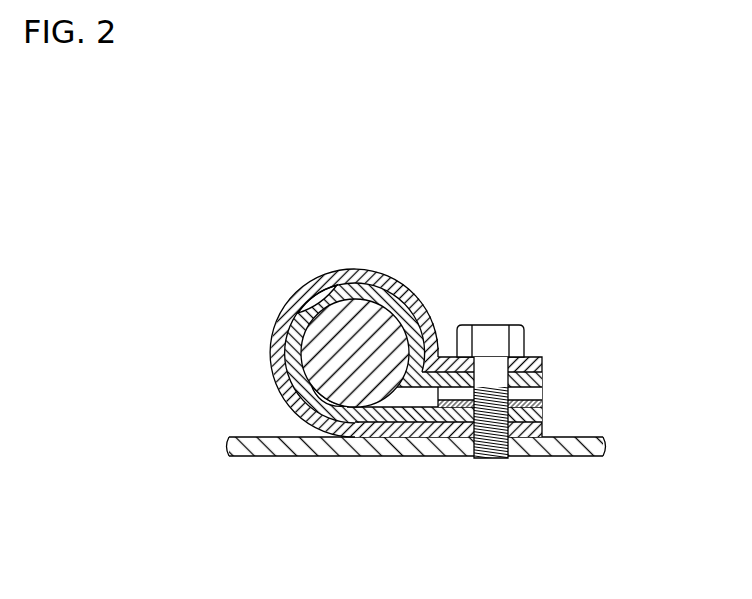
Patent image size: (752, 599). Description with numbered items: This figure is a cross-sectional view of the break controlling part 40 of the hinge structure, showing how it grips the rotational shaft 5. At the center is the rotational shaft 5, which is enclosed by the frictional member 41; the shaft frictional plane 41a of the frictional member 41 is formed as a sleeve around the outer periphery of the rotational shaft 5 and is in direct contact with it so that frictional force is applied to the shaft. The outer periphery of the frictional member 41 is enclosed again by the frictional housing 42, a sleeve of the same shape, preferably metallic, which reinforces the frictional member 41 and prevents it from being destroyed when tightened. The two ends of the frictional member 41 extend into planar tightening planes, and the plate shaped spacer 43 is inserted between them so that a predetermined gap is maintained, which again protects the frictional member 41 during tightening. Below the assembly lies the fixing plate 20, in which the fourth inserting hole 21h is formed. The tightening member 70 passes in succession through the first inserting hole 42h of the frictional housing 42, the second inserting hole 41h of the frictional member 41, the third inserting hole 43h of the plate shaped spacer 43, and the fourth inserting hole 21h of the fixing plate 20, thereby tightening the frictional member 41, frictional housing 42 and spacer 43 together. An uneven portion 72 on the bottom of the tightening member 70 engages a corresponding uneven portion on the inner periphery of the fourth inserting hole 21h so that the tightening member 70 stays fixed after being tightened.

The rotational shaft 5 is at (340, 378).
The fixing plate 20 is at (416, 504).
The fourth inserting hole 21h is at (515, 455).
The break controlling part 40 is at (446, 350).
The frictional member 41 is at (446, 344).
The shaft frictional plane 41a is at (413, 292).
The second inserting hole 41h is at (540, 362).
The frictional housing 42 is at (448, 318).
The first inserting hole 42h is at (525, 360).
The plate shaped spacer 43 is at (555, 381).
The third inserting hole 43h is at (543, 391).
The tightening member 70 is at (497, 385).
The uneven portion 72 is at (488, 443).